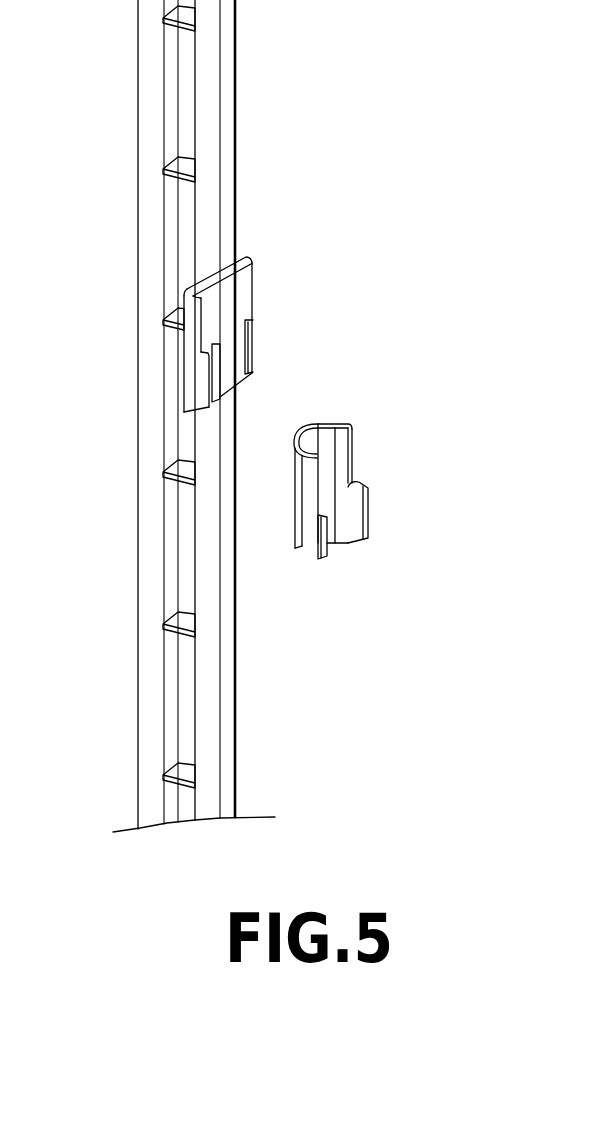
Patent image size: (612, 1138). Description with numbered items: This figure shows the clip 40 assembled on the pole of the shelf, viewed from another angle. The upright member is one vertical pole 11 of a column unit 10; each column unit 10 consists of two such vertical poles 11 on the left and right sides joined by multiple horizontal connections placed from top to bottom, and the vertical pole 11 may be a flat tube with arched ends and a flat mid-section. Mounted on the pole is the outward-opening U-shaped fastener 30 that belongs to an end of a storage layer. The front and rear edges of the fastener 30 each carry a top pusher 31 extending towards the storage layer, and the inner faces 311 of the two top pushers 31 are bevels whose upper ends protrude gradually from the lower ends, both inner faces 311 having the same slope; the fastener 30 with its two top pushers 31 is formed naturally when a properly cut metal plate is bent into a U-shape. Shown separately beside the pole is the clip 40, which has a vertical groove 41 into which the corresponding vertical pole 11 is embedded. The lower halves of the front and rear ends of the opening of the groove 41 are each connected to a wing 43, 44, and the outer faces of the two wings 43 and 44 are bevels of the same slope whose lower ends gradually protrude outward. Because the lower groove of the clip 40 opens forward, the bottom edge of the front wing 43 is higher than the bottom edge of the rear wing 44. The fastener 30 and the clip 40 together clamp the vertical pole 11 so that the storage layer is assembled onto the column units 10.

The column unit 10 is at (122, 97).
The vertical pole 11 is at (138, 255).
The fastener 30 is at (232, 295).
The top pusher 31 is at (202, 380).
The inner face 311 is at (253, 332).
The clip 40 is at (323, 424).
The vertical groove 41 is at (330, 468).
The front wing 43 is at (320, 537).
The rear wing 44 is at (368, 508).